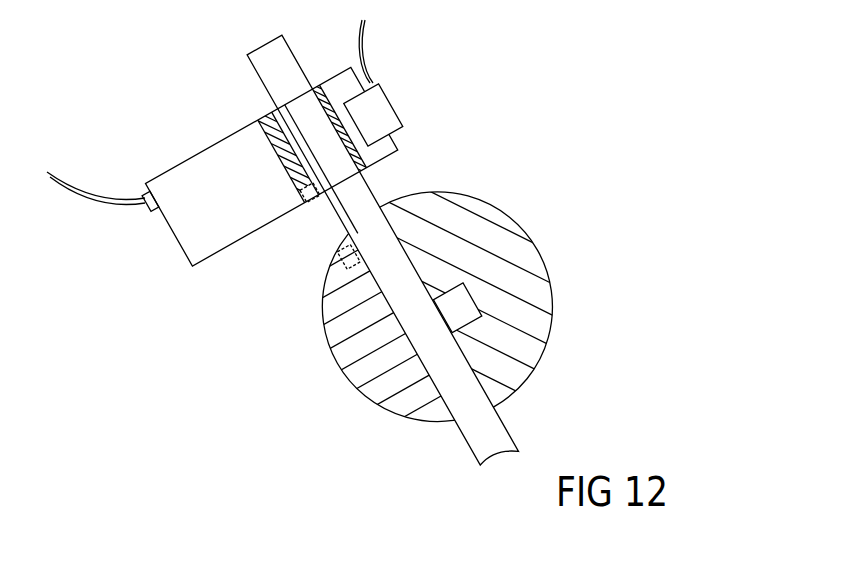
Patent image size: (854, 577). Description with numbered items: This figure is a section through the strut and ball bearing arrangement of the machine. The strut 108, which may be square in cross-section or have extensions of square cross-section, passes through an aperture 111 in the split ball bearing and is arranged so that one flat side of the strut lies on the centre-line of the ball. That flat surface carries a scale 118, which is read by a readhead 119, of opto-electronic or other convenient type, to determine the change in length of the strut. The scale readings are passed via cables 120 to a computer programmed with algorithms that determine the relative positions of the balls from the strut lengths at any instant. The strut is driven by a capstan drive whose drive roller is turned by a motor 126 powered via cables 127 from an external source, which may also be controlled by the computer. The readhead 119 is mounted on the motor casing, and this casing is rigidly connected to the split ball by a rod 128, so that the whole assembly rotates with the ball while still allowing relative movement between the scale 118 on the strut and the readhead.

The strut 108 is at (365, 197).
The aperture 111 is at (455, 308).
The scale 118 is at (503, 420).
The readhead 119 is at (393, 117).
The cable 120 is at (363, 45).
The motor 126 is at (227, 153).
The cable 127 is at (80, 188).
The rod 128 is at (320, 213).